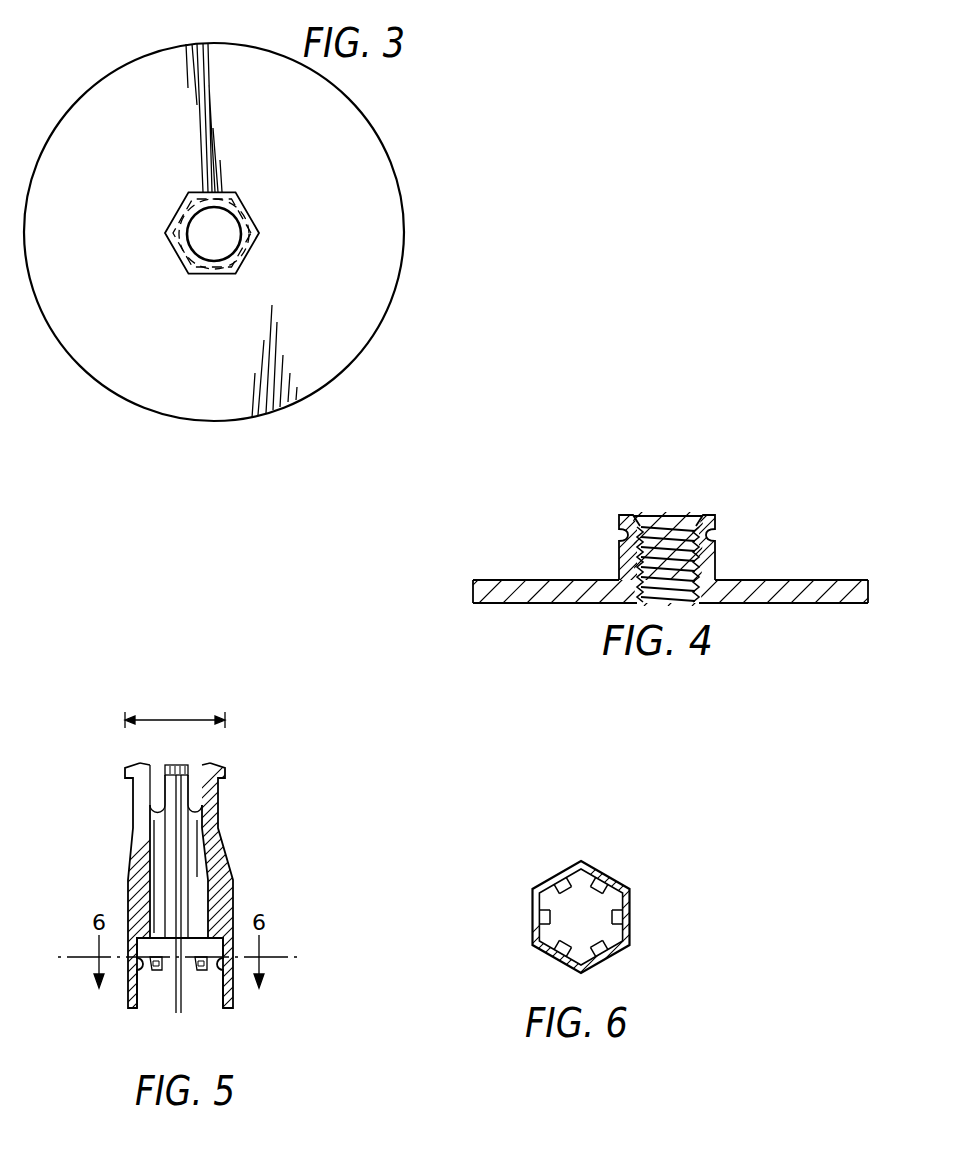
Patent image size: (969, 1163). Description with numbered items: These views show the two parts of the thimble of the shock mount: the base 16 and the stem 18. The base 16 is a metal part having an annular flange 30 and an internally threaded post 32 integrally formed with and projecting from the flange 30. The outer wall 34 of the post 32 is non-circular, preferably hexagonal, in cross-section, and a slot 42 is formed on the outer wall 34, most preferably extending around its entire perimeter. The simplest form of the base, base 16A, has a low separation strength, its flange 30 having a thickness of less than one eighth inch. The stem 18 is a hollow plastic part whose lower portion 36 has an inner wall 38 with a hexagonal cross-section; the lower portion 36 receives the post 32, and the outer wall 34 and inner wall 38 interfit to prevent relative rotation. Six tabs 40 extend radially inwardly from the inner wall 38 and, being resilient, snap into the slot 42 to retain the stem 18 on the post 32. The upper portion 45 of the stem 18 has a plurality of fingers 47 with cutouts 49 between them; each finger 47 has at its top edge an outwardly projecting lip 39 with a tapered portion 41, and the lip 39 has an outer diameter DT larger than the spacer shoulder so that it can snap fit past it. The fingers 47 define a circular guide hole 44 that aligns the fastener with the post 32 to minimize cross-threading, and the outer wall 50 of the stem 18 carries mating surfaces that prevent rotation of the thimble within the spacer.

In FIG. 3, the base 16 is at (337, 382).
In FIG. 4, the base with low separation strength 16A is at (587, 565).
In FIG. 5, the stem 18 is at (260, 880).
In FIG. 6, the stem 18 is at (621, 905).
In FIG. 3, the annular flange 30 is at (119, 394).
In FIG. 4, the annular flange 30 is at (800, 604).
In FIG. 3, the internally threaded post 32 is at (232, 276).
In FIG. 4, the internally threaded post 32 is at (708, 560).
In FIG. 3, the outer wall 34 is at (173, 213).
In FIG. 5, the lower portion 36 is at (234, 987).
In FIG. 5, the inner wall 38 is at (215, 992).
In FIG. 5, the lip 39 is at (226, 772).
In FIG. 5, the tab 40 is at (157, 972).
In FIG. 6, the tab 40 is at (577, 970).
In FIG. 5, the tapered portion 41 is at (129, 767).
In FIG. 4, the slot 42 is at (626, 536).
In FIG. 5, the guide hole 44 is at (199, 790).
In FIG. 5, the upper portion 45 is at (147, 801).
In FIG. 5, the fingers 47 is at (181, 790).
In FIG. 5, the cutouts 49 is at (158, 782).
In FIG. 5, the outer wall 50 is at (233, 906).
In FIG. 6, the outer wall 50 is at (557, 873).
In FIG. 5, the outer diameter DT is at (173, 716).